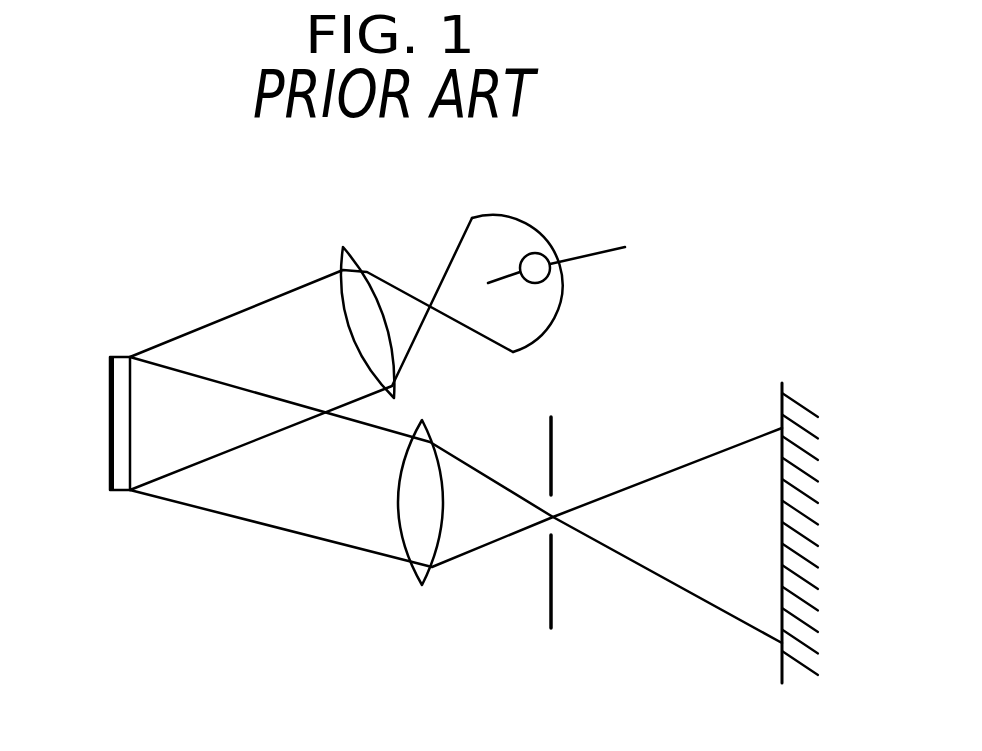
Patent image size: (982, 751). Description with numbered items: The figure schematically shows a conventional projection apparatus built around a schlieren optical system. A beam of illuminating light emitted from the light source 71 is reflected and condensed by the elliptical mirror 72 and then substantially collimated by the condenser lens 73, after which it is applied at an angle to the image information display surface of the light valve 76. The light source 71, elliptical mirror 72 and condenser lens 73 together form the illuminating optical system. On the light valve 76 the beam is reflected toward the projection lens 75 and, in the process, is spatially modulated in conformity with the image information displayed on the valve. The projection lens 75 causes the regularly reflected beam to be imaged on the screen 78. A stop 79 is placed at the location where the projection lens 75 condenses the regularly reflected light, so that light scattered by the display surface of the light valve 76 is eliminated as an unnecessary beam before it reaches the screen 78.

The light source 71 is at (553, 253).
The elliptical mirror 72 is at (532, 218).
The condenser lens 73 is at (352, 262).
The projection lens 75 is at (433, 443).
The light valve 76 is at (117, 407).
The screen 78 is at (780, 427).
The stop 79 is at (553, 467).